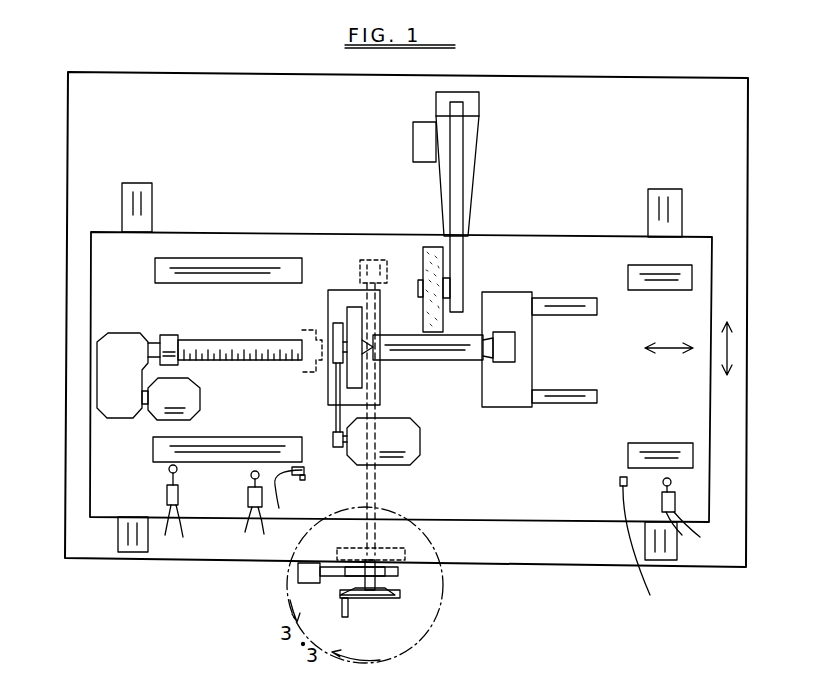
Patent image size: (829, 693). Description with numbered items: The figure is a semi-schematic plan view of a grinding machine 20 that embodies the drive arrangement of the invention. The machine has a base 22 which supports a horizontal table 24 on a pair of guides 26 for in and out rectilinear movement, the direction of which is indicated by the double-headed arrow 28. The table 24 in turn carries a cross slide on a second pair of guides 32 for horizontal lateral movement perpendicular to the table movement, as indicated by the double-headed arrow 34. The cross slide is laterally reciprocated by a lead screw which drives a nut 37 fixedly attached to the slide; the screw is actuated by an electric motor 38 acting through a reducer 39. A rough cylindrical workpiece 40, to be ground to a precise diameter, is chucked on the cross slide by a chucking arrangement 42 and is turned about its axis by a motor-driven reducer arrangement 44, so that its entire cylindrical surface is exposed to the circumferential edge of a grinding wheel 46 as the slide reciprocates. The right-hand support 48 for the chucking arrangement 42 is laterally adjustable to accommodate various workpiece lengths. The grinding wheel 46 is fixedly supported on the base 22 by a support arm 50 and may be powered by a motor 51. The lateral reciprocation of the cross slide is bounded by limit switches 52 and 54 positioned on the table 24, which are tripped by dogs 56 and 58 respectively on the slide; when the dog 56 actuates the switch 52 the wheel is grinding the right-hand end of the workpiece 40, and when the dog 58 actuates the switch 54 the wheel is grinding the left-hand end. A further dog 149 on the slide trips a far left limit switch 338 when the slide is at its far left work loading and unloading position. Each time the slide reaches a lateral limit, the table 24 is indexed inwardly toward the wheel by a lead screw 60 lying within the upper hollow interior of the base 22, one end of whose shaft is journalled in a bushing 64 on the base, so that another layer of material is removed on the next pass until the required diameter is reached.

The grinding machine 20 is at (518, 592).
The base 22 is at (575, 570).
The horizontal table 24 is at (713, 253).
The guides 26 is at (682, 205).
The double-headed arrow 28 is at (728, 343).
The guides 32 is at (155, 268).
The double-headed arrow 34 is at (672, 348).
The nut 37 is at (308, 328).
The electric motor 38 is at (148, 402).
The reducer 39 is at (97, 367).
The workpiece 40 is at (405, 360).
The chucking arrangement 42 is at (500, 407).
The motor-driven reducer arrangement 44 is at (345, 375).
The grinding wheel 46 is at (423, 268).
The right-hand support 48 is at (533, 347).
The support arm 50 is at (480, 98).
The motor 51 is at (420, 120).
The limit switch 52 is at (245, 500).
The limit switch 54 is at (675, 502).
The dog 56 is at (304, 478).
The dog 58 is at (649, 546).
The lead screw 60 is at (388, 488).
The bushing 64 is at (360, 271).
The dog 149 is at (297, 493).
The far left limit switch 338 is at (165, 500).